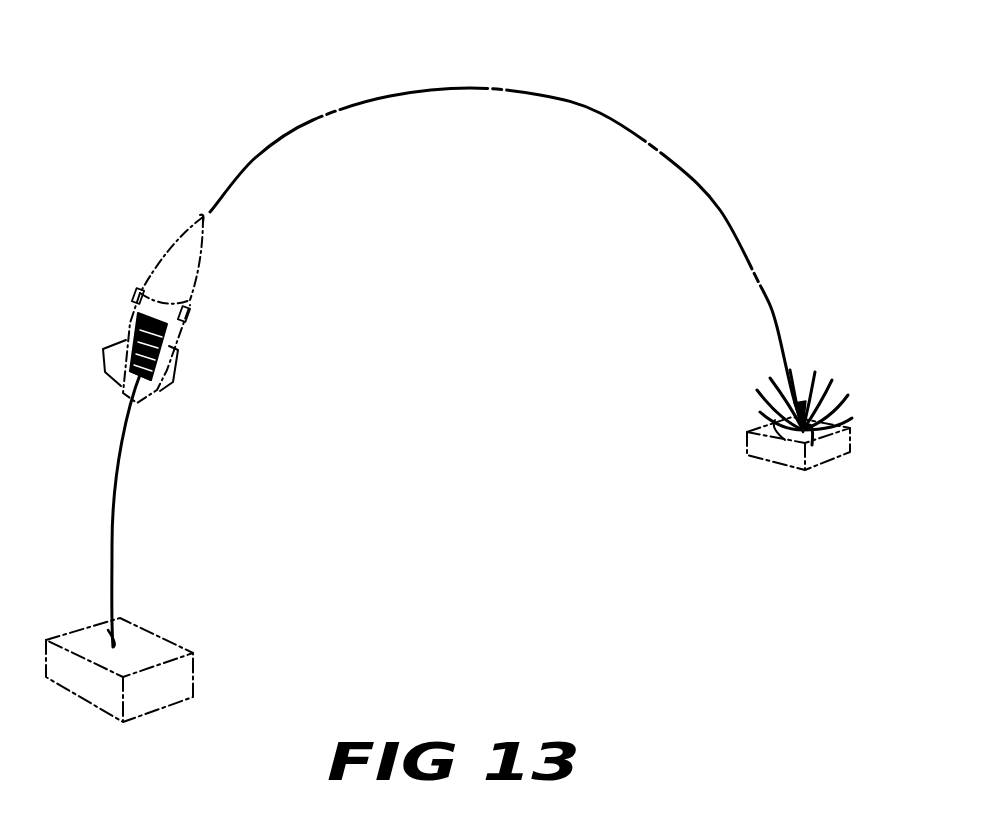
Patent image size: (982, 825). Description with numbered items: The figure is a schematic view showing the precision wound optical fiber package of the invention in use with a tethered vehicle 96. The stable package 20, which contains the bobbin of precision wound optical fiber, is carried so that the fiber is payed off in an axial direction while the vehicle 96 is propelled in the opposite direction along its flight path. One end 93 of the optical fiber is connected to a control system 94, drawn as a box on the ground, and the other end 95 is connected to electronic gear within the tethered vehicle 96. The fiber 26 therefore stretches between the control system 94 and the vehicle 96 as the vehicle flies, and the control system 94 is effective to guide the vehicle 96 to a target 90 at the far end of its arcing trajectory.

The tethered vehicle 96 is at (207, 250).
The stable package 20 is at (172, 338).
The end of optical fiber 95 is at (137, 371).
The line 26 is at (115, 507).
The end of optical fiber 93 is at (110, 640).
The control system 94 is at (145, 633).
The target 90 is at (843, 418).